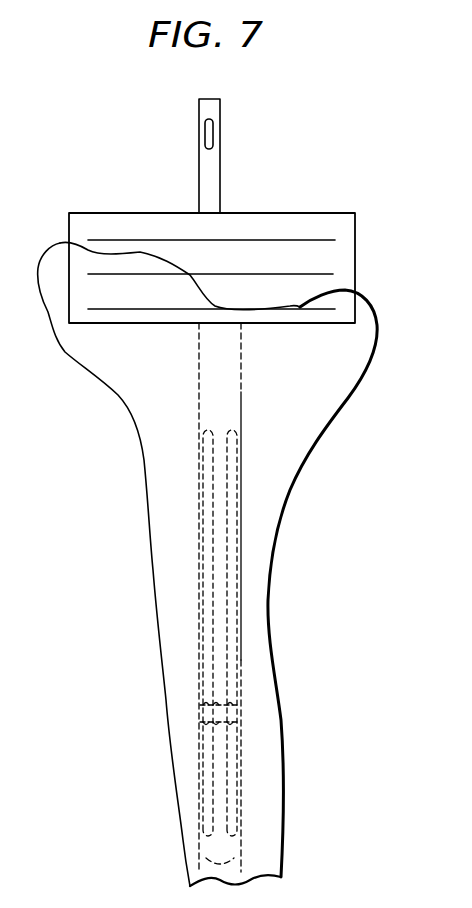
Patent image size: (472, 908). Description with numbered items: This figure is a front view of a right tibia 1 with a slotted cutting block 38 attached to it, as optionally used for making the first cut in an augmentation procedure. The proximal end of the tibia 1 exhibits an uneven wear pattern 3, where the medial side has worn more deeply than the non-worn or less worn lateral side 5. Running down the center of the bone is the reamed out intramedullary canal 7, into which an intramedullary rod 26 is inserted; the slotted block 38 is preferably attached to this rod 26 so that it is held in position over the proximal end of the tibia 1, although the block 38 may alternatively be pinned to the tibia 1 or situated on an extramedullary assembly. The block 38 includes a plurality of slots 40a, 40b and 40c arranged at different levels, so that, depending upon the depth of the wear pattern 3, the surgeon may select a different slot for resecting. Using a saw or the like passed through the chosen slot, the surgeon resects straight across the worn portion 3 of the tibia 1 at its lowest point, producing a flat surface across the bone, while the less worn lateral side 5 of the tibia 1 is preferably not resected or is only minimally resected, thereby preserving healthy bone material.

The tibia 1 is at (165, 680).
The wear pattern 3 is at (323, 290).
The lateral side 5 is at (60, 243).
The intramedullary canal 7 is at (241, 517).
The intramedullary rod 26 is at (220, 412).
The slotted block 38 is at (254, 225).
The slot 40a is at (173, 240).
The slot 40b is at (131, 276).
The slot 40c is at (129, 305).